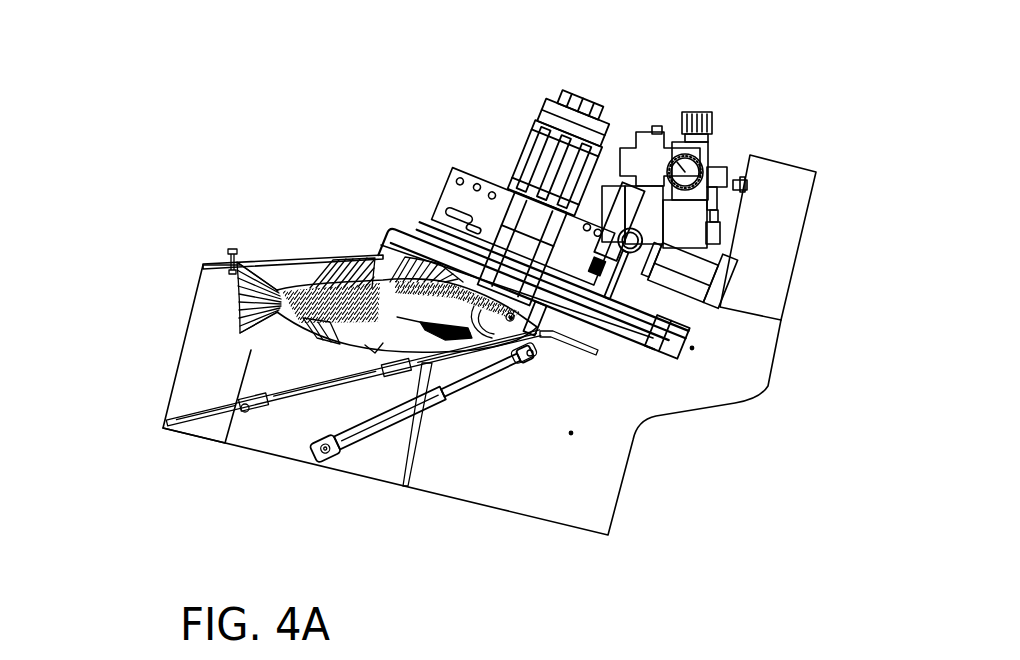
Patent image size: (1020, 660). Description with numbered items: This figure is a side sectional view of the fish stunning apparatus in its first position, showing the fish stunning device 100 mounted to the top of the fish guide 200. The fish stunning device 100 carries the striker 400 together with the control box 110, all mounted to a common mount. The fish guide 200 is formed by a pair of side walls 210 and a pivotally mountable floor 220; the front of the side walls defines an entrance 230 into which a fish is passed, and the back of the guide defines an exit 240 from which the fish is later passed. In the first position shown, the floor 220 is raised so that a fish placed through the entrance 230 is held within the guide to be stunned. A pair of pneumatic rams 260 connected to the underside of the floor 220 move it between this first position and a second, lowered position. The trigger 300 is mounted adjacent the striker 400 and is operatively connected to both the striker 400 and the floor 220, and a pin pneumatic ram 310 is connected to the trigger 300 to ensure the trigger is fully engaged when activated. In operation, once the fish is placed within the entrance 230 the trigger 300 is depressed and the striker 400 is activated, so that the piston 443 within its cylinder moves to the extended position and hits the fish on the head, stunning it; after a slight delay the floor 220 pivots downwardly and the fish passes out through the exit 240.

The fish stunning device 100 is at (827, 118).
The control box 110 is at (782, 208).
The fish guide 200 is at (333, 258).
The side walls 210 is at (292, 282).
The floor 220 is at (290, 396).
The entrance 230 is at (171, 357).
The exit 240 is at (667, 474).
The pneumatic rams 260 is at (370, 428).
The trigger 300 is at (677, 358).
The pin pneumatic ram 310 is at (443, 203).
The striker 400 is at (616, 105).
The piston 443 is at (512, 192).